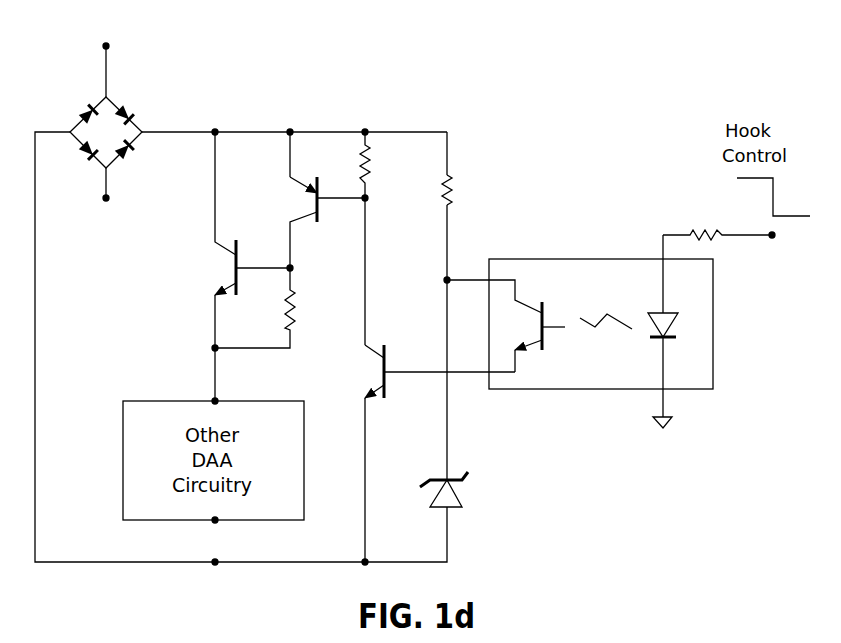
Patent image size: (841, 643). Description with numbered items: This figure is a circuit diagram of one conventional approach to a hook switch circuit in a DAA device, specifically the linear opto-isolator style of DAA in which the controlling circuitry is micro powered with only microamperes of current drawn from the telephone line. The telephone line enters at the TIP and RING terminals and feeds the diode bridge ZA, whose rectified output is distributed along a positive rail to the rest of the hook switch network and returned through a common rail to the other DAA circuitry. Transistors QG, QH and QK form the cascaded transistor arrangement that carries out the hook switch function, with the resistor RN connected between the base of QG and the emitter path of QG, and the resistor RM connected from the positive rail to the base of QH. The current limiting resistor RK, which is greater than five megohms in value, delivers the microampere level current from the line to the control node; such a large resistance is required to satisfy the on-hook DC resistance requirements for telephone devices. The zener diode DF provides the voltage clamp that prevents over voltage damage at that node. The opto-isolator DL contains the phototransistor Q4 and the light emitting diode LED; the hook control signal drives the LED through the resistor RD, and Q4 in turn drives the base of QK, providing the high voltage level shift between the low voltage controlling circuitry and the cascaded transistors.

The tip terminal TIP is at (122, 70).
The ring terminal RING is at (77, 184).
The diode bridge rectifier ZA is at (104, 124).
The transistor QG is at (252, 266).
The transistor QH is at (329, 200).
The transistor QK is at (440, 451).
The resistor RN 47K RN is at (275, 308).
The resistor RM 450K RM is at (392, 238).
The resistor RK 10MEG RK is at (480, 188).
The zener diode DF is at (457, 489).
The optocoupler DL is at (580, 331).
The phototransistor Q4 is at (544, 336).
The light emitting diode LED is at (675, 331).
The resistor RD 100 RD is at (719, 210).